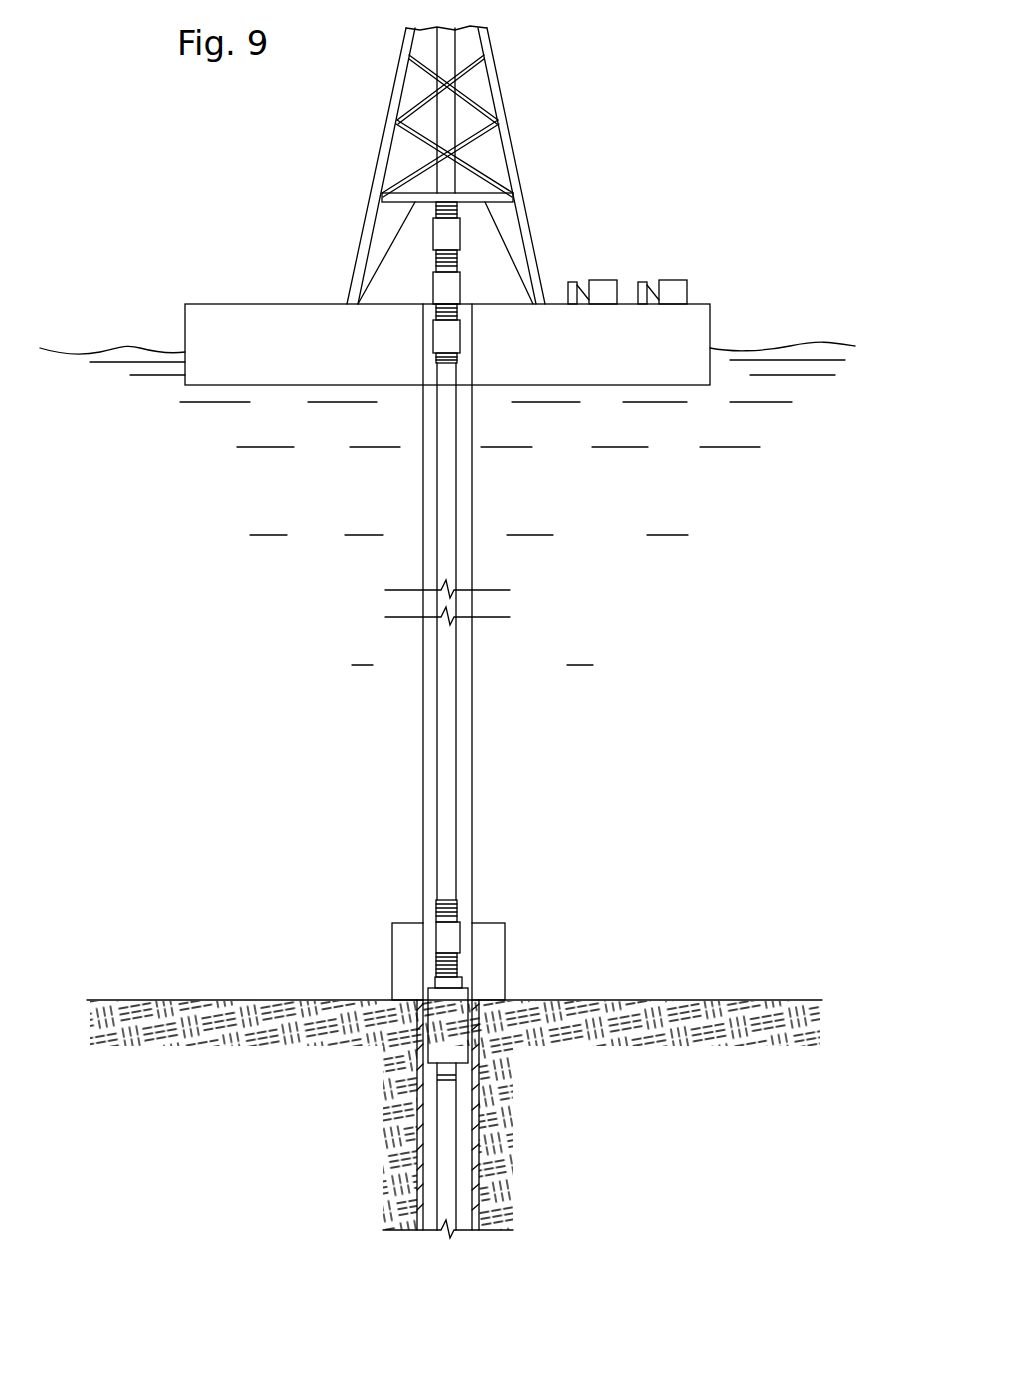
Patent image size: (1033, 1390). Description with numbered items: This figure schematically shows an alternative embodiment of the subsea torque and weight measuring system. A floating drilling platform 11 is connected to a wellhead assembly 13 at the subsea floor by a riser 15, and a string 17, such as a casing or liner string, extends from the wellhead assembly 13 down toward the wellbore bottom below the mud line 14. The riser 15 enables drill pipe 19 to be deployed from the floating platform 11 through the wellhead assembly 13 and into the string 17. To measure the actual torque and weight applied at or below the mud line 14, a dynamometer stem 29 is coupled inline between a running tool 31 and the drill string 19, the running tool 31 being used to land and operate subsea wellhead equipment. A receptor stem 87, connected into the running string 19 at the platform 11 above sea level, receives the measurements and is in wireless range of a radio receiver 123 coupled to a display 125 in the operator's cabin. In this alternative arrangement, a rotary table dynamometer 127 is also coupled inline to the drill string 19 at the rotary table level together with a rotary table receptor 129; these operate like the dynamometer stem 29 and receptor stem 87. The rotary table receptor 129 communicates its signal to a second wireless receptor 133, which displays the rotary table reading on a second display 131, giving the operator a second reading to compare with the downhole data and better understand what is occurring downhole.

The floating drilling platform 11 is at (712, 330).
The wellhead assembly 13 is at (505, 950).
The mud line 14 is at (225, 998).
The riser 15 is at (472, 492).
The string 17 is at (480, 1102).
The drill pipe 19 is at (456, 565).
The dynamometer stem 29 is at (436, 938).
The running tool 31 is at (445, 1028).
The receptor stem 87 is at (433, 338).
The radio receiver 123 is at (642, 282).
The display 125 is at (688, 290).
The rotary table dynamometer 127 is at (433, 288).
The rotary table receptor 129 is at (433, 233).
The second display 131 is at (603, 280).
The second wireless receptor 133 is at (573, 282).